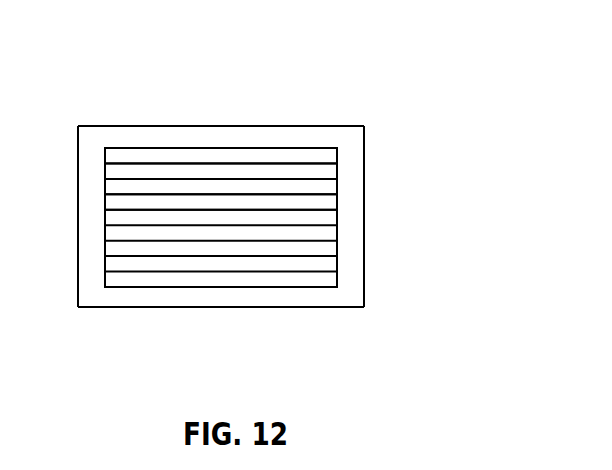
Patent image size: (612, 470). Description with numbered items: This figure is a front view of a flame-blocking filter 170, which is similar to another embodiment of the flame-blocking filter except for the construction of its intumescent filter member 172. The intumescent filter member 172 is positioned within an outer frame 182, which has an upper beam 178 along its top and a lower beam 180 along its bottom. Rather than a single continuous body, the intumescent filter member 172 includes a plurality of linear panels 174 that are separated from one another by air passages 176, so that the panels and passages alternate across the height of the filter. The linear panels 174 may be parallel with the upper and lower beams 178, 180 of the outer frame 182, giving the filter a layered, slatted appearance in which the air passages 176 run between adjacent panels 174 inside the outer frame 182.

The flame-blocking filter 170 is at (376, 81).
The intumescent filter member 172 is at (321, 172).
The linear panels 174 is at (319, 217).
The air passages 176 is at (233, 160).
The upper beam 178 is at (187, 127).
The lower beam 180 is at (213, 308).
The outer frame 182 is at (365, 293).